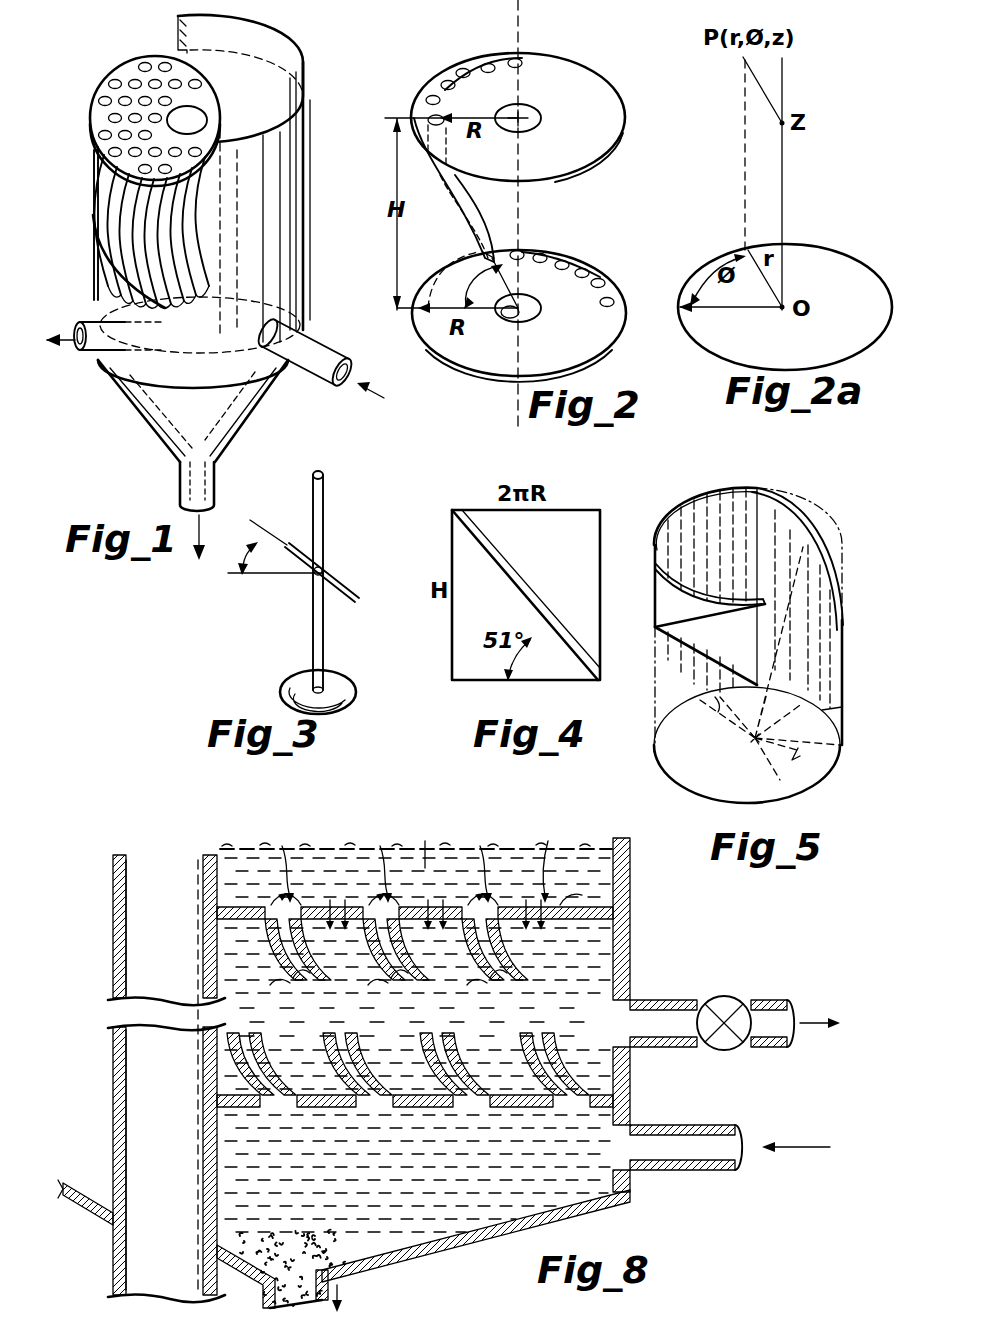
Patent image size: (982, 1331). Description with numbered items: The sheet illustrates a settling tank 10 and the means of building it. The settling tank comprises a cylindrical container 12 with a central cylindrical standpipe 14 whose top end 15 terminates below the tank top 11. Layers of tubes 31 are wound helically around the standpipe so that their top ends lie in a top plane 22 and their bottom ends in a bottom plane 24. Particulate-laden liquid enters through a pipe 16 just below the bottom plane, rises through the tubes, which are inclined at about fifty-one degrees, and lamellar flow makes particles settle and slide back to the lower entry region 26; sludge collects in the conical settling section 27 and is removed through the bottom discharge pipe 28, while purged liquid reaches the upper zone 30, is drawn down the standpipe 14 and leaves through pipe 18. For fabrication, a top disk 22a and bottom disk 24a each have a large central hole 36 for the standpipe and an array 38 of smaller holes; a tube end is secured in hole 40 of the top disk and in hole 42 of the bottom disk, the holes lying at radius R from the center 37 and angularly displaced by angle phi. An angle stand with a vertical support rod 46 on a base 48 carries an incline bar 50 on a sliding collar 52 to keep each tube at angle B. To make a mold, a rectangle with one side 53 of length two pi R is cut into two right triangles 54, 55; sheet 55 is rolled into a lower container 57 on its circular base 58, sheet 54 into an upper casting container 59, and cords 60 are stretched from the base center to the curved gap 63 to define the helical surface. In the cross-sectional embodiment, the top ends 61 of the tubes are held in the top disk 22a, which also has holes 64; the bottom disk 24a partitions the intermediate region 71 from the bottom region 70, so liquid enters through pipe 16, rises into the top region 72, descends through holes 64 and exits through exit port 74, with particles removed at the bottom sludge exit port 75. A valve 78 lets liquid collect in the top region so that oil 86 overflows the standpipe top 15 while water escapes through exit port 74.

In FIG. 1, the settling tank 10 is at (285, 27).
In FIG. 1, the tank top 11 is at (242, 52).
In FIG. 1, the cylindrical container 12 is at (300, 224).
In FIG. 1, the central cylindrical standpipe 14 is at (232, 296).
In FIG. 8, the central cylindrical standpipe 14 is at (120, 1043).
In FIG. 1, the top end of standpipe 15 is at (211, 120).
In FIG. 8, the top end of standpipe 15 is at (119, 855).
In FIG. 1, the entry pipe 16 is at (300, 368).
In FIG. 8, the entry pipe 16 is at (688, 1122).
In FIG. 1, the exit pipe 18 is at (83, 322).
In FIG. 1, the top plane 22 is at (97, 100).
In FIG. 2, the top disk 22a is at (597, 147).
In FIG. 8, the top disk 22a is at (608, 915).
In FIG. 1, the bottom plane 24 is at (303, 307).
In FIG. 2, the bottom disk 24a is at (428, 348).
In FIG. 8, the bottom disk 24a is at (312, 1096).
In FIG. 1, the lower entry region 26 is at (133, 370).
In FIG. 1, the conical settling section 27 is at (238, 431).
In FIG. 8, the conical settling section 27 is at (418, 1215).
In FIG. 1, the bottom discharge pipe 28 is at (180, 489).
In FIG. 1, the upper zone 30 is at (300, 133).
In FIG. 1, the tubes 31 is at (100, 211).
In FIG. 2, the tubes 31 is at (456, 203).
In FIG. 2, the central hole 36 is at (533, 112).
In FIG. 2, the center of the disks 37 is at (530, 306).
In FIG. 2, the array of smaller holes 38 is at (445, 80).
In FIG. 8, the array of smaller holes 38 is at (423, 874).
In FIG. 2, the hole in top disk 40 is at (432, 117).
In FIG. 2, the hole in bottom disk 42 is at (478, 243).
In FIG. 3, the vertical support rod 46 is at (312, 627).
In FIG. 3, the base 48 is at (300, 672).
In FIG. 3, the incline bar 50 is at (336, 585).
In FIG. 3, the collar 52 is at (322, 567).
In FIG. 4, the side of rectangle 53 is at (480, 681).
In FIG. 4, the right triangle sheet 54 is at (603, 538).
In FIG. 5, the right triangle sheet 54 is at (672, 520).
In FIG. 4, the right triangle sheet 55 is at (445, 610).
In FIG. 5, the right triangle sheet 55 is at (843, 745).
In FIG. 5, the container for the sculpture 57 is at (655, 748).
In FIG. 5, the circular base 58 is at (740, 762).
In FIG. 5, the upper half container 59 is at (848, 532).
In FIG. 5, the cords 60 is at (803, 806).
In FIG. 8, the top ends of tubes 61 is at (320, 974).
In FIG. 5, the curved gap 63 is at (840, 707).
In FIG. 8, the holes 64 is at (553, 860).
In FIG. 8, the bottom region 70 is at (378, 1196).
In FIG. 8, the intermediate region 71 is at (440, 1019).
In FIG. 8, the top region 72 is at (427, 843).
In FIG. 8, the exit port 74 is at (632, 1003).
In FIG. 8, the bottom sludge exit port 75 is at (270, 1290).
In FIG. 8, the valve 78 is at (724, 996).
In FIG. 8, the oil 86 is at (244, 845).